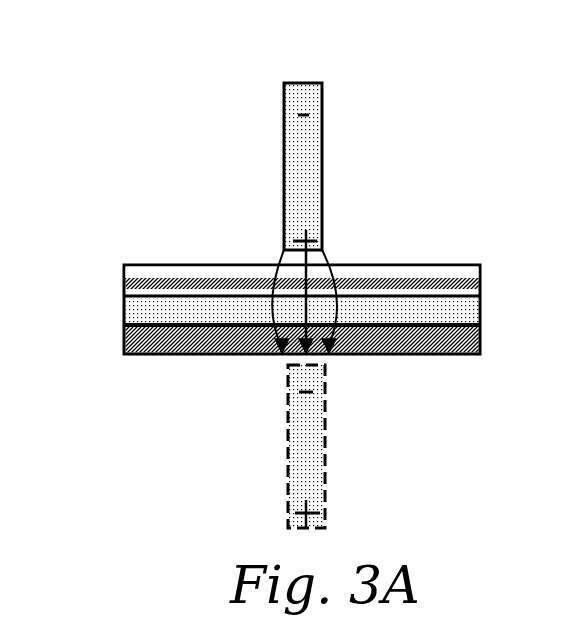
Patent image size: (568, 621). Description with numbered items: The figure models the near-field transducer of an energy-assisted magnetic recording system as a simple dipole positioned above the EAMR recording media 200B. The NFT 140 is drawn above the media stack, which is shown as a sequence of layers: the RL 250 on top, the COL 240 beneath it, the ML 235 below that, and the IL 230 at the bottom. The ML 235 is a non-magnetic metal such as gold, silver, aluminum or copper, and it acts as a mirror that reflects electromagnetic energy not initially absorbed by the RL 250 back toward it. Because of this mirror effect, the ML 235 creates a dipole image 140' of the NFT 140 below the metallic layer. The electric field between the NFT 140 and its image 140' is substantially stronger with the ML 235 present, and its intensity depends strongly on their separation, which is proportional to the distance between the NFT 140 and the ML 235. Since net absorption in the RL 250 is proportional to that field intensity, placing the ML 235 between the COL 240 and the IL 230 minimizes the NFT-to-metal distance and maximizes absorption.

The NFT 140 is at (356, 191).
The image 140' is at (369, 446).
The EAMR recording media 200B is at (414, 244).
The RL 250 is at (123, 273).
The COL 240 is at (123, 292).
The ML 235 is at (123, 312).
The IL 230 is at (123, 340).